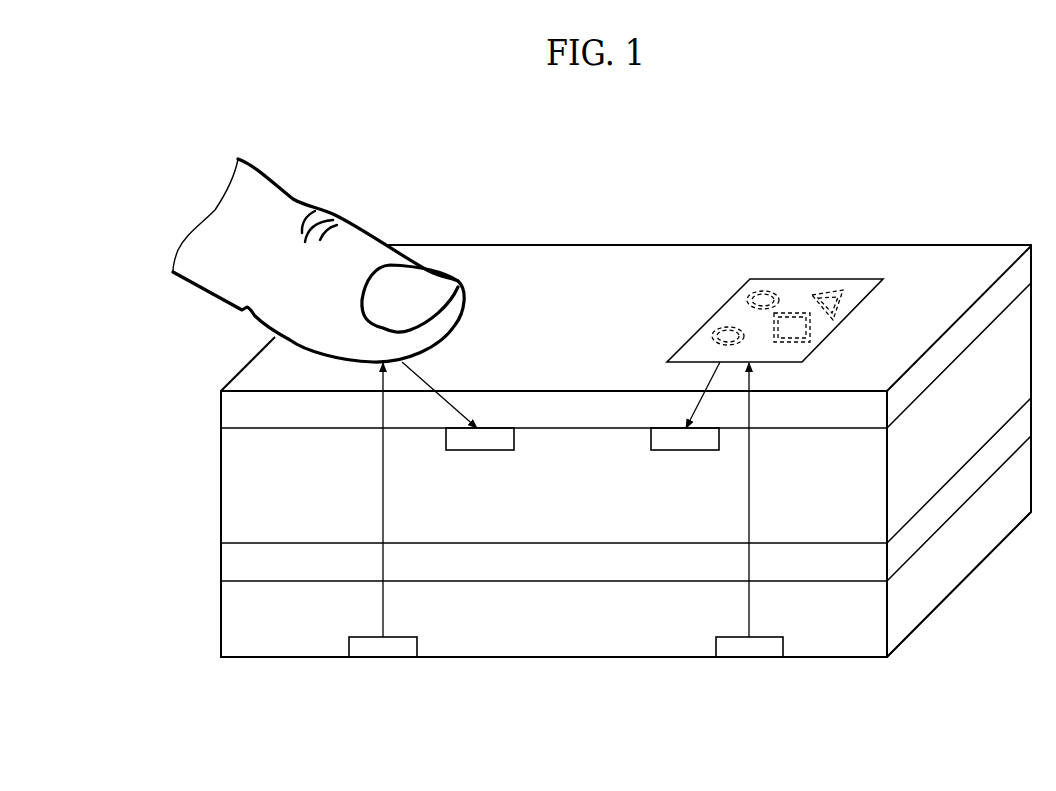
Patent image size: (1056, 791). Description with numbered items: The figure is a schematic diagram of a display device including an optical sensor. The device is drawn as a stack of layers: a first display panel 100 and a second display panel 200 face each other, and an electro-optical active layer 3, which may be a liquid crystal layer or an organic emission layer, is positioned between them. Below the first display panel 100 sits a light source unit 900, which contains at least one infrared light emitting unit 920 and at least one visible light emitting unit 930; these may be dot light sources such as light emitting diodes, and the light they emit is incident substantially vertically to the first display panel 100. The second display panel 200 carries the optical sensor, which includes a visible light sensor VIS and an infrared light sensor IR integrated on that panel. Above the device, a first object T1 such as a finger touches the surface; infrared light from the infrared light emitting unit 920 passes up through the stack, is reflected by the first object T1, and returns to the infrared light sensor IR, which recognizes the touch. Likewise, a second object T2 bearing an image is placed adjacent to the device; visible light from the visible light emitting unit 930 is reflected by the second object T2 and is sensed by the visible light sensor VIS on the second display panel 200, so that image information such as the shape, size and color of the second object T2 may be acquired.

The first object T1 is at (352, 240).
The second object T2 is at (837, 278).
The second display panel 200 is at (216, 391).
The electro-optical active layer 3 is at (216, 429).
The first display panel 100 is at (216, 544).
The light source unit 900 is at (216, 582).
The infrared light sensor IR is at (494, 452).
The visible light sensor VIS is at (673, 452).
The infrared light emitting unit 920 is at (391, 648).
The visible light emitting unit 930 is at (747, 650).